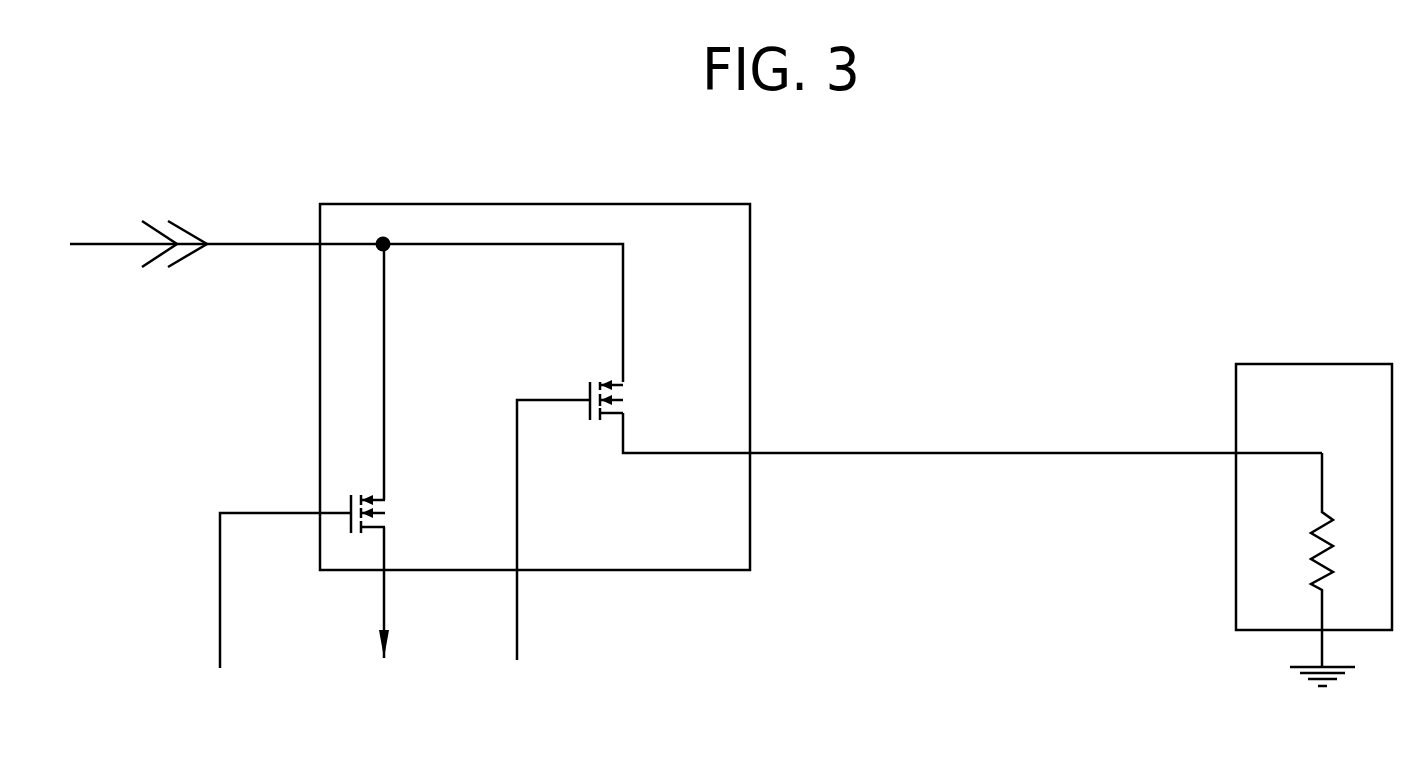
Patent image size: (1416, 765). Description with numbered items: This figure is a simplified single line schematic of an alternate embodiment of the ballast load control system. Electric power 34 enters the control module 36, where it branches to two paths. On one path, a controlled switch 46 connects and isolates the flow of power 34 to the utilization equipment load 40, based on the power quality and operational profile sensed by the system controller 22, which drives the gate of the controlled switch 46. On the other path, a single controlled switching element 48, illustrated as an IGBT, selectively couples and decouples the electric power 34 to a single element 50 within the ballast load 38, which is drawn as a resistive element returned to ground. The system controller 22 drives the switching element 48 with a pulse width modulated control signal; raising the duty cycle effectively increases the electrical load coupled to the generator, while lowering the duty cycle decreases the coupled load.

The system controller 22 is at (375, 566).
The electric power 34 is at (247, 243).
The control module 36 is at (497, 203).
The ballast load 38 is at (1315, 363).
The utilization equipment load 40 is at (388, 694).
The controlled switch 46 is at (380, 508).
The controlled switching element 48 is at (618, 392).
The single element 50 is at (1317, 565).